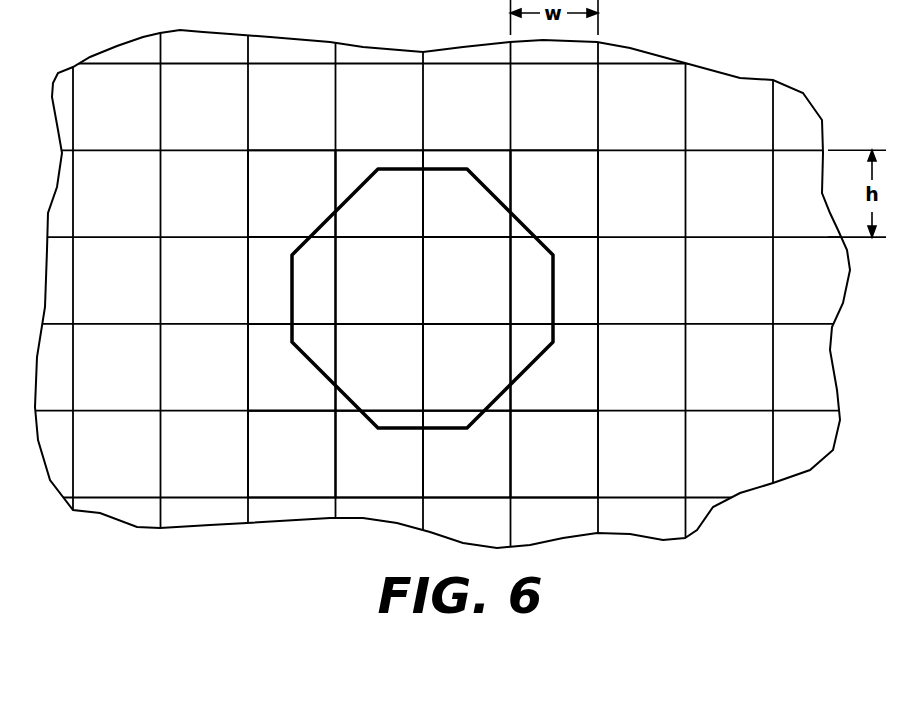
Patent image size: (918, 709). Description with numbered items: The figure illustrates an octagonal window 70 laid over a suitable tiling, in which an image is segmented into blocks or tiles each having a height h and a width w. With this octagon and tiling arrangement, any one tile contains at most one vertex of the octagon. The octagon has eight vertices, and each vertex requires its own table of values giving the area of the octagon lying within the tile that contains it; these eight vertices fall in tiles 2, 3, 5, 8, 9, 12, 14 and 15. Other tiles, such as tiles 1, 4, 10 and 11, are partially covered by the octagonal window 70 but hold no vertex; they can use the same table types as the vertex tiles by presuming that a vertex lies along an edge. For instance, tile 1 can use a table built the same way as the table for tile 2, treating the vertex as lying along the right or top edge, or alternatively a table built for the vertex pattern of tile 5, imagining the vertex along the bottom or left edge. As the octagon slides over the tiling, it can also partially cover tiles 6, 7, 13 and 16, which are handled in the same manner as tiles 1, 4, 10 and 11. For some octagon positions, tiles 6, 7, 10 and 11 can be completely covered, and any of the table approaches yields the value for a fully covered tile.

The octagonal window 70 is at (438, 167).
The tile 1 is at (292, 193).
The tile 2 is at (380, 193).
The tile 3 is at (467, 193).
The tile 4 is at (555, 193).
The tile 5 is at (292, 280).
The tile 6 is at (380, 280).
The tile 7 is at (467, 280).
The tile 8 is at (555, 280).
The tile 9 is at (292, 367).
The tile 10 is at (380, 367).
The tile 11 is at (467, 367).
The tile 12 is at (555, 367).
The tile 13 is at (292, 454).
The tile 14 is at (380, 454).
The tile 15 is at (467, 454).
The tile 16 is at (555, 454).